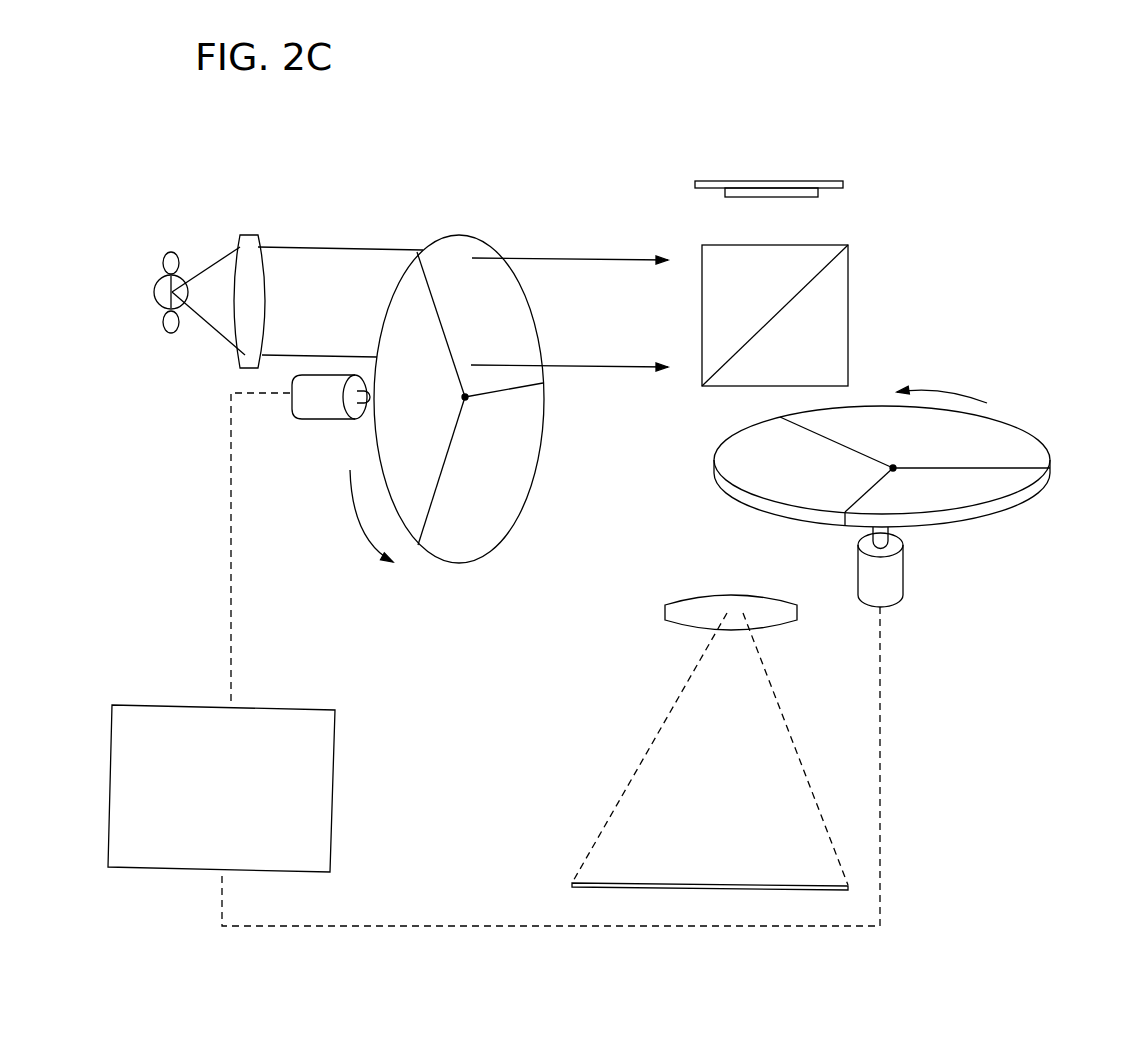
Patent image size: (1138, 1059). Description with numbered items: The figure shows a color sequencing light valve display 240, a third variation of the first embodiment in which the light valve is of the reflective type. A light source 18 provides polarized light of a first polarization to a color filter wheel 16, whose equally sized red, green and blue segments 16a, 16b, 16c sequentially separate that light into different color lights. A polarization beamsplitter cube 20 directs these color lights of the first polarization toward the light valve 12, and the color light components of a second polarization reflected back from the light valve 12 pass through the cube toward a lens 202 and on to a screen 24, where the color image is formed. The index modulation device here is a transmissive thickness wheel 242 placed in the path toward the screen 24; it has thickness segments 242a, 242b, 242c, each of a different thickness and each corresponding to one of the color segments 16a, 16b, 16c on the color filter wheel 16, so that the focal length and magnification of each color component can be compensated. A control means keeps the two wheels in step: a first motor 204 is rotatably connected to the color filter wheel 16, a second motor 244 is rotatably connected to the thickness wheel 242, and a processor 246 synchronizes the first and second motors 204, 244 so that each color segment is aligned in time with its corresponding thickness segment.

The light valve 12 is at (802, 181).
The color filter wheel 16 is at (458, 388).
The red color filter segment 16a is at (462, 247).
The green color filter segment 16b is at (523, 450).
The blue color filter segment 16c is at (413, 293).
The light source 18 is at (156, 291).
The polarization beamsplitter cube 20 is at (850, 282).
The screen 24 is at (580, 885).
The lens 202 is at (675, 623).
The first motor 204 is at (312, 418).
The display 240 is at (948, 213).
The thickness wheel 242 is at (866, 422).
The first thickness segment 242a is at (730, 455).
The second thickness segment 242b is at (1013, 442).
The third thickness segment 242c is at (960, 503).
The second motor 244 is at (892, 593).
The processor 246 is at (137, 705).